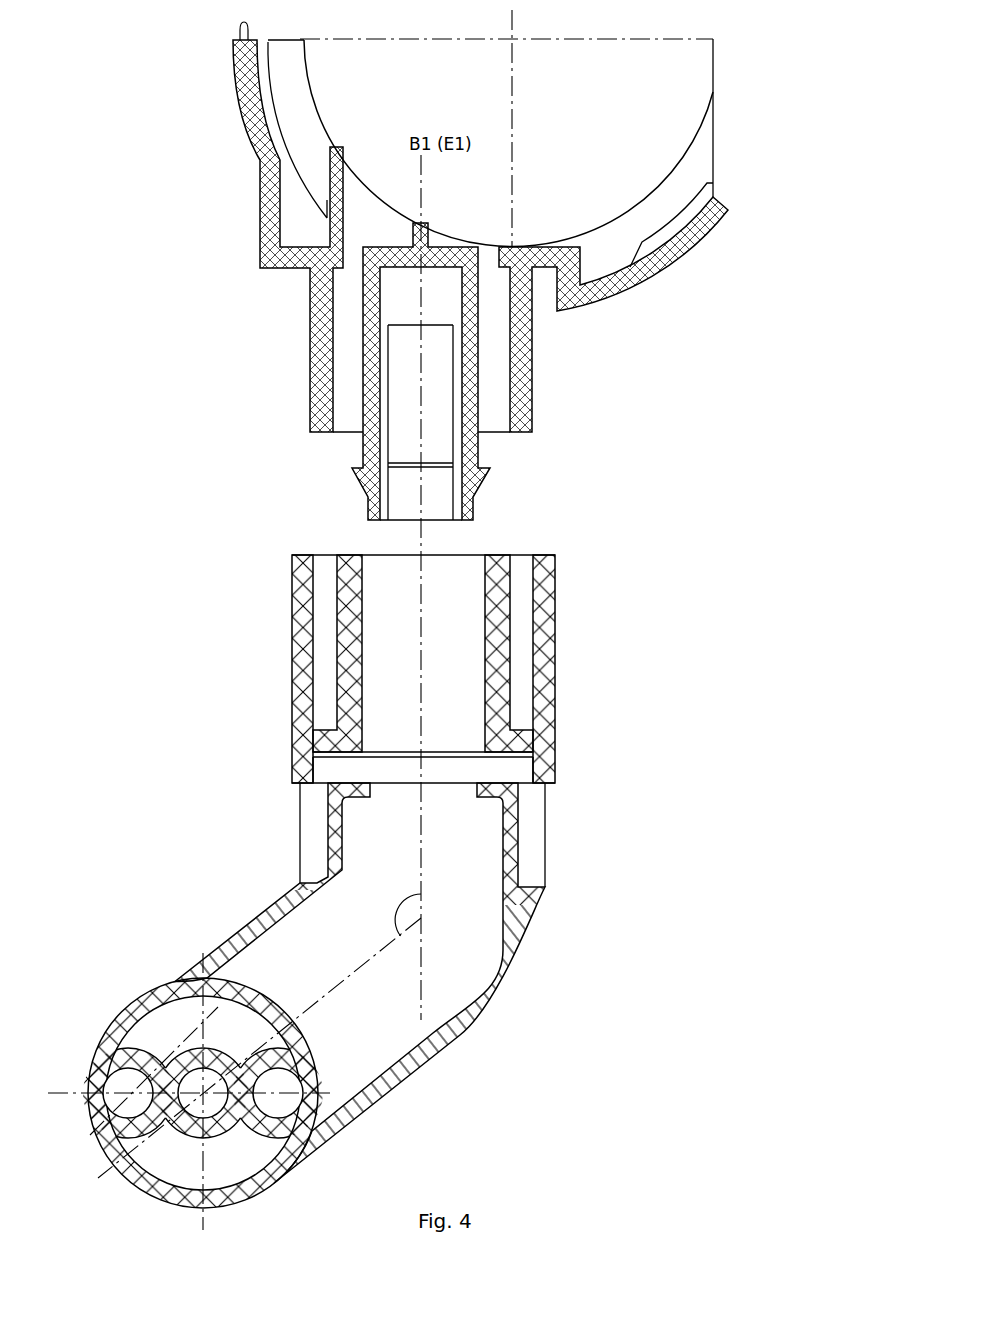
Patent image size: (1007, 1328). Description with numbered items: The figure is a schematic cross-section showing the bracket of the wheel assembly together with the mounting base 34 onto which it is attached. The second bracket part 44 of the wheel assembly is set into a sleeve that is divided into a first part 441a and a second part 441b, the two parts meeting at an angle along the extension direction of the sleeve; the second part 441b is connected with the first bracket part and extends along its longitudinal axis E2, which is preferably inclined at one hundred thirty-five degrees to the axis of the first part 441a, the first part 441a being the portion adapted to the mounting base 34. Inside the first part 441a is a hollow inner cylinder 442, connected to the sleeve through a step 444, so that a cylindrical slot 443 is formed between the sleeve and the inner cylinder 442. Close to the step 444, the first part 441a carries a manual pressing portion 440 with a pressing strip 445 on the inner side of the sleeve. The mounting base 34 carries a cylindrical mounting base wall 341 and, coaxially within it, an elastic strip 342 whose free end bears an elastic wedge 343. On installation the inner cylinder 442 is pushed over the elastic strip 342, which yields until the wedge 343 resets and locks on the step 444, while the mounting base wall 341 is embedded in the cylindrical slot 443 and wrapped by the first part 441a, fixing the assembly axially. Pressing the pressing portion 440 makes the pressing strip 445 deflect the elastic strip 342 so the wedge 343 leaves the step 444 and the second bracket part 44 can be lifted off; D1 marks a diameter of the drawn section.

The mounting base 34 is at (434, 286).
The mounting base wall 341 is at (520, 292).
The elastic strip 342 is at (475, 345).
The elastic wedge 343 is at (475, 480).
The second bracket part 44 is at (418, 876).
The manual pressing portion 440 is at (520, 857).
The first part 441a is at (300, 697).
The second part 441b is at (347, 1002).
The hollow inner cylinder 442 is at (345, 607).
The cylindrical slot 443 is at (522, 723).
The step 444 is at (293, 778).
The pressing strip 445 is at (480, 800).
The longitudinal axis of the second part E2 is at (331, 990).
The outlet hole diameter D1 is at (203, 1093).